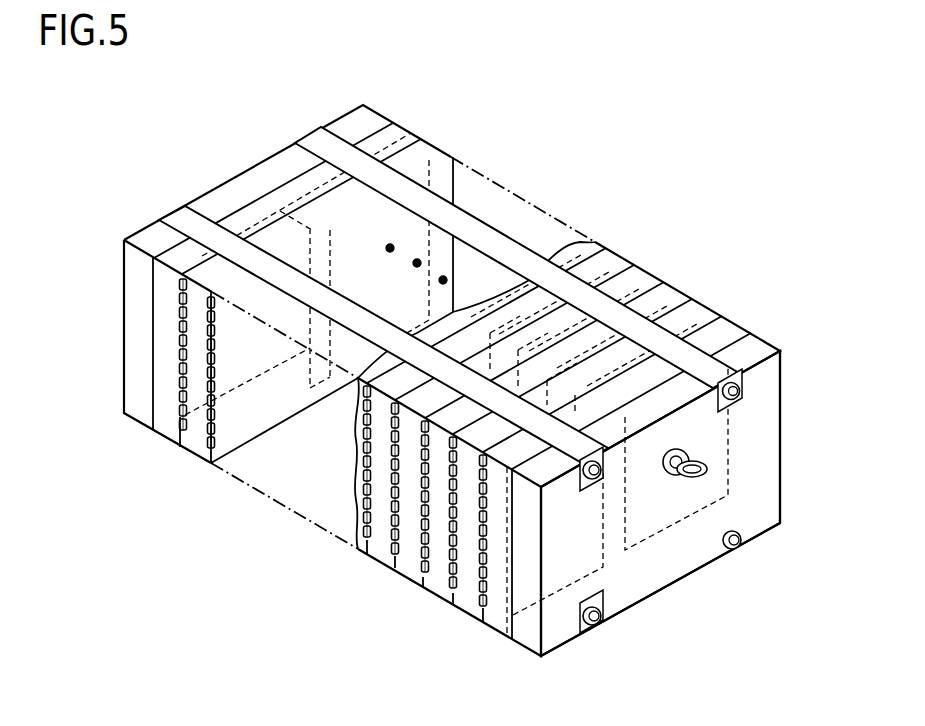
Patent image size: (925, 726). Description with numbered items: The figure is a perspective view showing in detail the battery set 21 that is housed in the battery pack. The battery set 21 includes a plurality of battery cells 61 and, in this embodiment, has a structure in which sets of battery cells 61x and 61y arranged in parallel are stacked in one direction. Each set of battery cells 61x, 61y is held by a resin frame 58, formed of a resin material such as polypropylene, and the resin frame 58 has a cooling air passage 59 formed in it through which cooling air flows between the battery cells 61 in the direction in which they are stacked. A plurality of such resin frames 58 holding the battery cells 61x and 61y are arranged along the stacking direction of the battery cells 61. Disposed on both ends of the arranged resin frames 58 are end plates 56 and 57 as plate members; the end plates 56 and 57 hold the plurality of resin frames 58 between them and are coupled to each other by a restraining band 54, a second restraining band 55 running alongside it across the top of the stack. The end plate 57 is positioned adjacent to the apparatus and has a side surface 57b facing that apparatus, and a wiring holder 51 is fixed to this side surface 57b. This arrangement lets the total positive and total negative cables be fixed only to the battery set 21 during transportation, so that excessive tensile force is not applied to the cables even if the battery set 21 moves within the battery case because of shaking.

The battery set 21 is at (484, 116).
The wiring holder 51 is at (708, 467).
The restraining band 54 is at (513, 250).
The restraint band 55 is at (205, 227).
The end plate 56 is at (272, 173).
The end plate 57 is at (752, 352).
The side surface 57b is at (755, 450).
The resin frame 58 is at (437, 585).
The cooling air passage 59 is at (392, 566).
The battery cell 61 is at (627, 540).
The battery cell 61x is at (603, 572).
The battery cell 61y is at (652, 540).